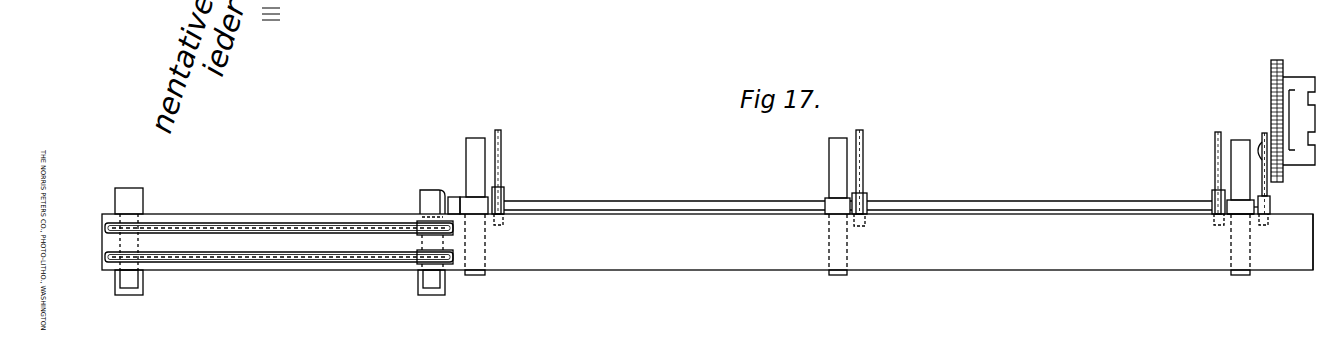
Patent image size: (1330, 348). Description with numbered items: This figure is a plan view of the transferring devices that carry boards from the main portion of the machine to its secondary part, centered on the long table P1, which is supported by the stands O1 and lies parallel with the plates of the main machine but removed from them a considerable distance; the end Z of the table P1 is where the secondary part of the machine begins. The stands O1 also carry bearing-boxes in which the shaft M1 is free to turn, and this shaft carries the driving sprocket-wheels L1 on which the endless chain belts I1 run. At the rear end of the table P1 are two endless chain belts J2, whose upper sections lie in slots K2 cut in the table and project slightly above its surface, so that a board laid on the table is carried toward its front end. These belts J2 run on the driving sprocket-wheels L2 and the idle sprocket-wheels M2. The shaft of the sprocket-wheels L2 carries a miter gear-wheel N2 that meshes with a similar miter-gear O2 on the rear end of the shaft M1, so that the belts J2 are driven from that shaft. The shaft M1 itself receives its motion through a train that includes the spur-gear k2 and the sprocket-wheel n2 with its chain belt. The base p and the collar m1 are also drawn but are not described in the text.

The table P1 is at (707, 242).
The end of the table Z is at (1301, 242).
The base plate p is at (1209, 231).
The idle sprocket-wheels M2 is at (150, 215).
The endless chain belts J2 is at (322, 222).
The slots K2 is at (362, 222).
The miter gear-wheel N2 is at (417, 211).
The miter-gear O2 is at (436, 182).
The driving sprocket-wheels L2 is at (448, 274).
The stands O1 is at (476, 135).
The endless chain belts I1 is at (502, 157).
The driving sprocket-wheels L1 is at (505, 197).
The shaft M1 is at (652, 201).
The collar m1 is at (1244, 170).
The sprocket-wheel n2 is at (1261, 140).
The spur-gear k2 is at (1276, 60).